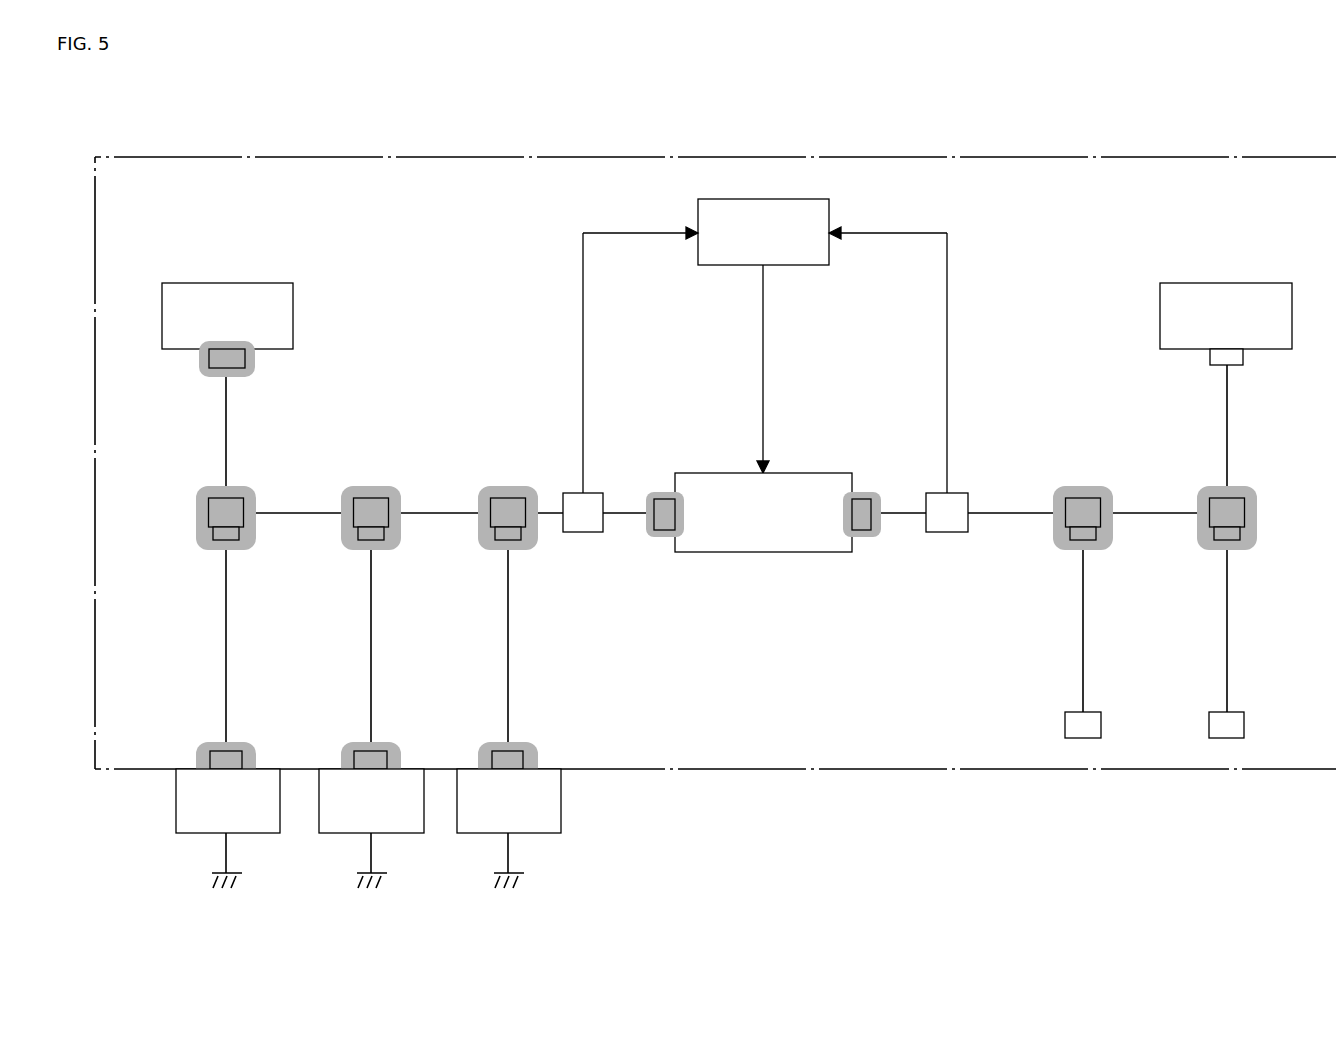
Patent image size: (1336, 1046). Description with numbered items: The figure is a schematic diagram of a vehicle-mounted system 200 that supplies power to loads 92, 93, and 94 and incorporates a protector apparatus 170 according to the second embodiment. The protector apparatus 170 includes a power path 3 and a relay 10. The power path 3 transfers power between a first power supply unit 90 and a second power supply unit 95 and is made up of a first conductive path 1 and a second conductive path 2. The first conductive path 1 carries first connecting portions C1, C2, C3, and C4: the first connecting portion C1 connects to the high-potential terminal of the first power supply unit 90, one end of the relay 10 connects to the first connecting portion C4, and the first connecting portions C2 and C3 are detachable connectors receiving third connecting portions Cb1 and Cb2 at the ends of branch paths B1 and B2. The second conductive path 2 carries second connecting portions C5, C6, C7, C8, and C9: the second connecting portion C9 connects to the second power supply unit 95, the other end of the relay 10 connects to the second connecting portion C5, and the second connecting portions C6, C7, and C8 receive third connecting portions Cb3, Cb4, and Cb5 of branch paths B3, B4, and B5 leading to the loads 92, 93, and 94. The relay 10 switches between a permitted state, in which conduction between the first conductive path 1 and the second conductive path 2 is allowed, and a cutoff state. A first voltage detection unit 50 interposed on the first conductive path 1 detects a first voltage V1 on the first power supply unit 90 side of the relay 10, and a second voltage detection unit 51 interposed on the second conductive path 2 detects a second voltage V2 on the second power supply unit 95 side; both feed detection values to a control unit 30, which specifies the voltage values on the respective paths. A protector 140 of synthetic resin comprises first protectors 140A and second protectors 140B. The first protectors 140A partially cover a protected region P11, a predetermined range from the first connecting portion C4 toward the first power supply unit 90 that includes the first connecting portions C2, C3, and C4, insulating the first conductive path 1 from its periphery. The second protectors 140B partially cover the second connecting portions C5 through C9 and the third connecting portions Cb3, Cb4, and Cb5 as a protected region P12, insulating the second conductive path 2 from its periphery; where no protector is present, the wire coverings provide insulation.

The vehicle-mounted system 200 is at (1100, 157).
The control unit 30 is at (829, 212).
The second power supply unit 95 is at (246, 283).
The first power supply unit 90 is at (1240, 283).
The relay 10 is at (800, 473).
The second voltage detection unit 51 is at (590, 532).
The first voltage detection unit 50 is at (925, 523).
The protector apparatus 170 is at (253, 373).
The protector 140 is at (253, 360).
The first protector 140A is at (867, 530).
The second protector 140B is at (253, 366).
The first conductive path 1 is at (888, 513).
The second conductive path 2 is at (226, 418).
The power path 3 is at (226, 440).
The first connecting portion C1 is at (1243, 357).
The first connecting portion C2 is at (1244, 503).
The first connecting portion C3 is at (1065, 520).
The first connecting portion C4 is at (863, 499).
The second connecting portion C5 is at (663, 499).
The second connecting portion C6 is at (524, 520).
The second connecting portion C7 is at (388, 520).
The second connecting portion C8 is at (244, 520).
The second connecting portion C9 is at (208, 358).
The third connecting portion Cb1 is at (1239, 533).
The third connecting portion Cb2 is at (1098, 535).
The third connecting portion Cb3 is at (495, 533).
The third connecting portion Cb4 is at (358, 533).
The third connecting portion Cb5 is at (214, 533).
The branch path B1 is at (1227, 618).
The branch path B2 is at (1083, 650).
The branch path B3 is at (508, 645).
The branch path B4 is at (371, 630).
The branch path B5 is at (226, 618).
The first voltage V1 is at (954, 325).
The second voltage V2 is at (590, 325).
The protected region P11 is at (955, 603).
The protected region P12 is at (166, 660).
The load 92 is at (561, 810).
The load 93 is at (424, 810).
The load 94 is at (280, 810).